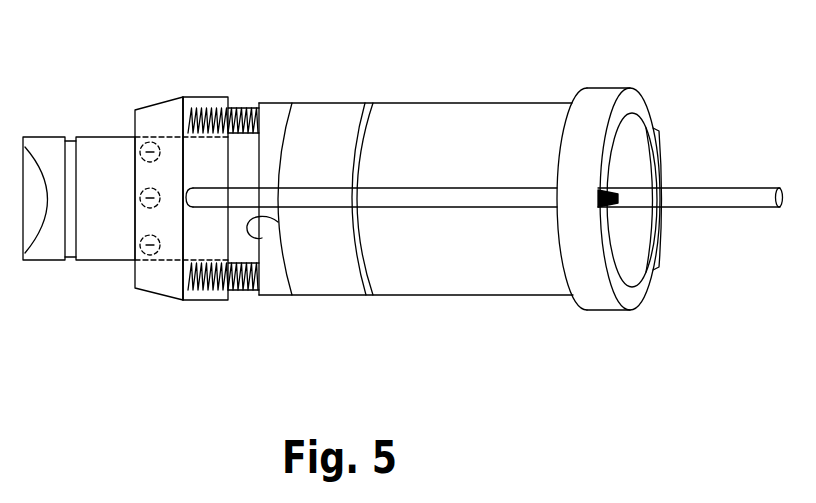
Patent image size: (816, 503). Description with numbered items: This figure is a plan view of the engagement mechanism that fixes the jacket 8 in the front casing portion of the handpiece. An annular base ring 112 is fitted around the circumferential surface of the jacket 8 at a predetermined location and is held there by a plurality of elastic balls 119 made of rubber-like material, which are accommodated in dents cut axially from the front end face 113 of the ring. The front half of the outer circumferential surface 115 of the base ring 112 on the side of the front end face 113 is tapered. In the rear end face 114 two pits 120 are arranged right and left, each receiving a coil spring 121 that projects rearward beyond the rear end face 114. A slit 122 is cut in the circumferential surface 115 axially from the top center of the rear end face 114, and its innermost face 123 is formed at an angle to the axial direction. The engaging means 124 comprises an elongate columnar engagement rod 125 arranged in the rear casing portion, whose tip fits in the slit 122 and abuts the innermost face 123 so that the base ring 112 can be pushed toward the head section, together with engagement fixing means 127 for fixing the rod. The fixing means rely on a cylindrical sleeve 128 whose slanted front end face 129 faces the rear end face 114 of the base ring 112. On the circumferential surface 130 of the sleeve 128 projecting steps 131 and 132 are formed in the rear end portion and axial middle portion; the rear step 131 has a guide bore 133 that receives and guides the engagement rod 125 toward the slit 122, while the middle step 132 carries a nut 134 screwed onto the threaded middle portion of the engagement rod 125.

The jacket 8 is at (103, 150).
The front end face 113 is at (133, 187).
The base ring 112 is at (163, 277).
The balls 119 is at (145, 145).
The slit 122 is at (197, 237).
The circumferential surface 115 is at (186, 160).
The pits 120 is at (212, 108).
The coil spring 121 is at (238, 108).
The engaging means 124 is at (233, 237).
The innermost face 123 is at (183, 197).
The engagement rod 125 is at (458, 187).
The rear end face 114 is at (230, 172).
The engagement fixing means 127 is at (407, 150).
The step 132 is at (323, 167).
The circumferential surface 130 is at (387, 123).
The nut 134 is at (355, 200).
The sleeve 128 is at (453, 273).
The front end face 129 is at (278, 222).
The step 131 is at (578, 175).
The guide bore 133 is at (600, 203).